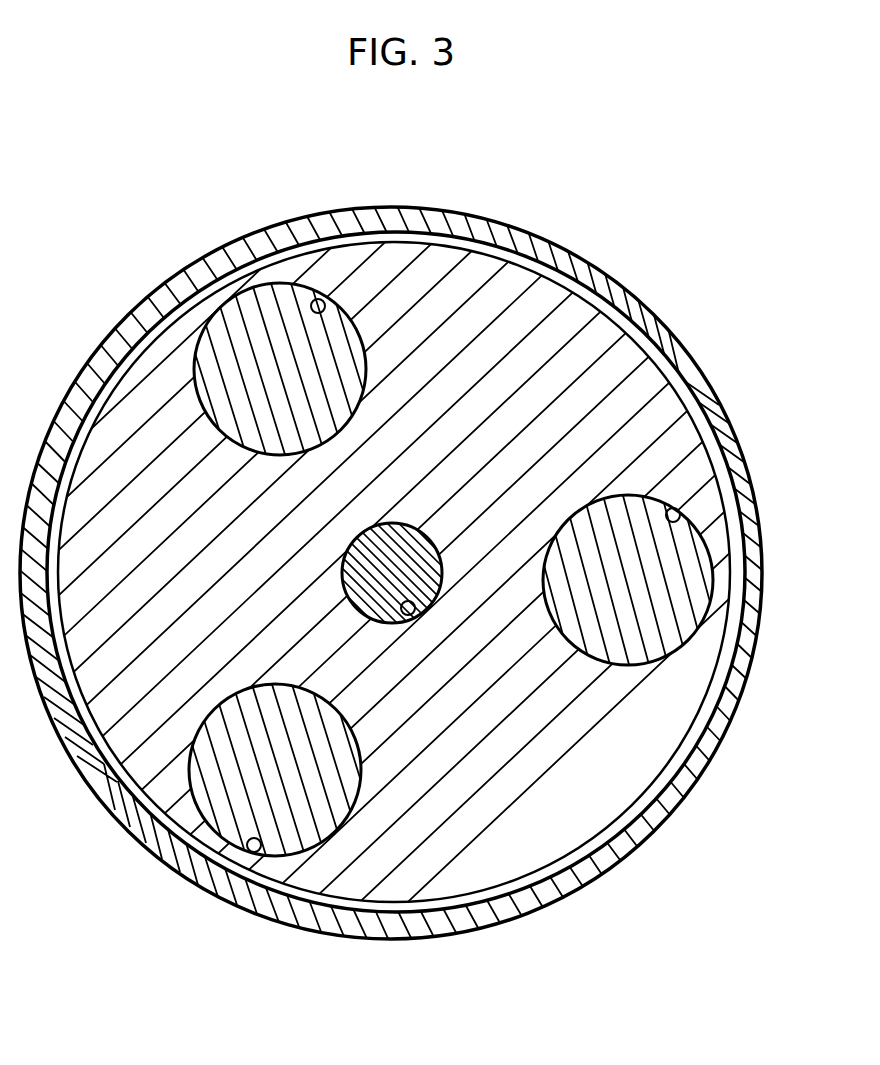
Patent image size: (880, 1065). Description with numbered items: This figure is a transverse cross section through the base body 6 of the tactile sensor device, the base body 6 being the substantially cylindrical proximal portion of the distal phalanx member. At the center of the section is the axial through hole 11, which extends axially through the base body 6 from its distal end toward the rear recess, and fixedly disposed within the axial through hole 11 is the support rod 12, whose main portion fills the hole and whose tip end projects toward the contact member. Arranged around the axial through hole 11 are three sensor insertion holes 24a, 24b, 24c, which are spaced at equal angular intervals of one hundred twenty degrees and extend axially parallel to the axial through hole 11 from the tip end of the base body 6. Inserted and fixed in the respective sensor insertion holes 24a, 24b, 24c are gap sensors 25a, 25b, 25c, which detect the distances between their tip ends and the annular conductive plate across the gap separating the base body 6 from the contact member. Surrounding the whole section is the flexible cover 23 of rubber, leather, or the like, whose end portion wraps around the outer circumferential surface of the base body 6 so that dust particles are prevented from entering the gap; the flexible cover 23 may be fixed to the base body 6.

The base body 6 is at (590, 288).
The flexible cover 23 is at (370, 939).
The sensor insertion hole 24a is at (680, 509).
The sensor insertion hole 24b is at (311, 298).
The sensor insertion hole 24c is at (250, 852).
The gap sensor 25a is at (672, 570).
The gap sensor 25b is at (263, 365).
The gap sensor 25c is at (248, 782).
The axial through hole 11 is at (418, 612).
The support rod 12 is at (414, 584).